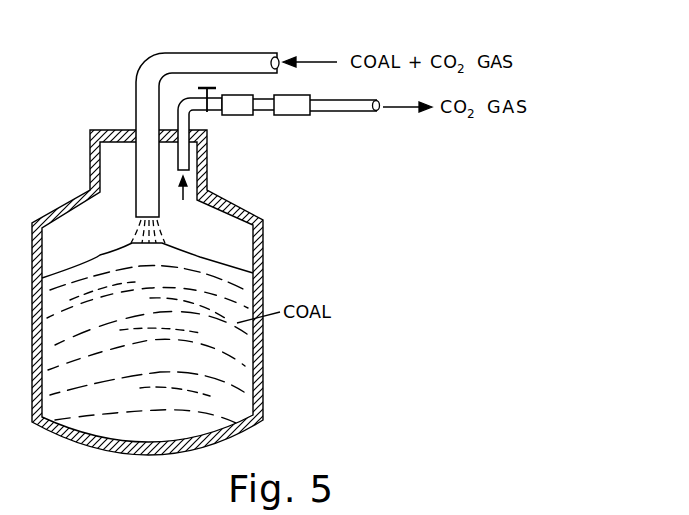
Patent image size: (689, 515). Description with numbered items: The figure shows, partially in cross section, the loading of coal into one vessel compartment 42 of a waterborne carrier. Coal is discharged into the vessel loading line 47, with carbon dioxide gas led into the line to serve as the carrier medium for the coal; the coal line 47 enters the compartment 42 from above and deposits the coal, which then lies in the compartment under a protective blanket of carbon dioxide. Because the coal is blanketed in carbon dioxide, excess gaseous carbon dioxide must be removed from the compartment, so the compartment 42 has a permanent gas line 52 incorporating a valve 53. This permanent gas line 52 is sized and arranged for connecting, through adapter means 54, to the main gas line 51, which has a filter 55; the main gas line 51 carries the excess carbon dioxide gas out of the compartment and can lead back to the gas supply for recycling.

The vessel compartment 42 is at (258, 369).
The vessel loading line 47 is at (200, 60).
The main gas line 51 is at (352, 105).
The permanent gas line 52 is at (183, 163).
The valve 53 is at (200, 108).
The adapter means 54 is at (238, 108).
The filter 55 is at (292, 108).